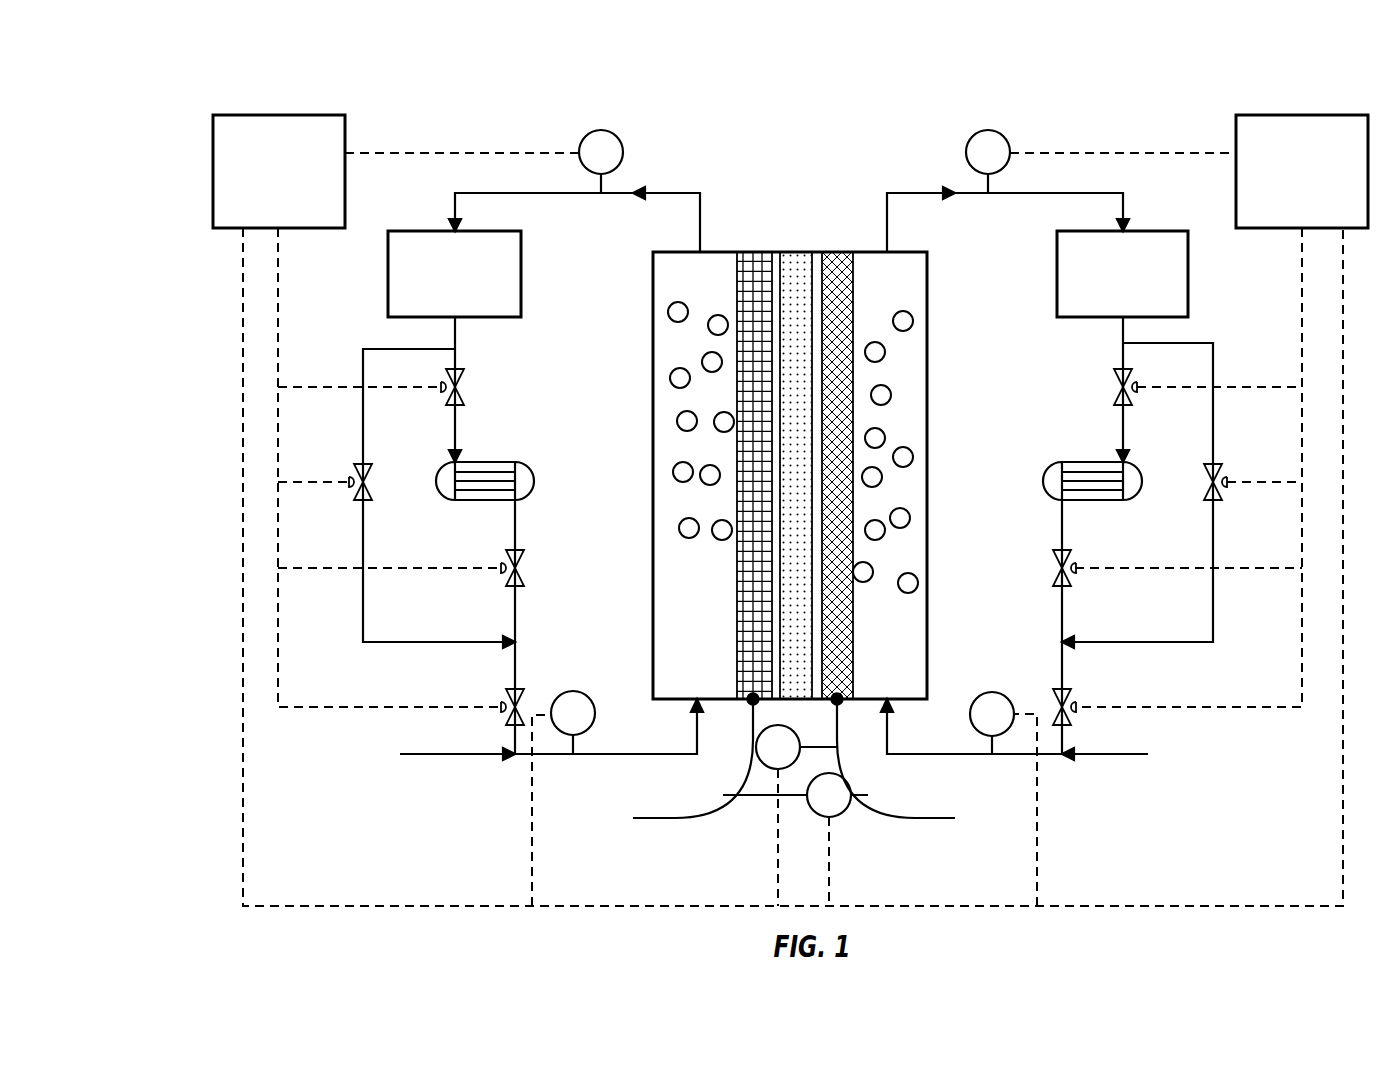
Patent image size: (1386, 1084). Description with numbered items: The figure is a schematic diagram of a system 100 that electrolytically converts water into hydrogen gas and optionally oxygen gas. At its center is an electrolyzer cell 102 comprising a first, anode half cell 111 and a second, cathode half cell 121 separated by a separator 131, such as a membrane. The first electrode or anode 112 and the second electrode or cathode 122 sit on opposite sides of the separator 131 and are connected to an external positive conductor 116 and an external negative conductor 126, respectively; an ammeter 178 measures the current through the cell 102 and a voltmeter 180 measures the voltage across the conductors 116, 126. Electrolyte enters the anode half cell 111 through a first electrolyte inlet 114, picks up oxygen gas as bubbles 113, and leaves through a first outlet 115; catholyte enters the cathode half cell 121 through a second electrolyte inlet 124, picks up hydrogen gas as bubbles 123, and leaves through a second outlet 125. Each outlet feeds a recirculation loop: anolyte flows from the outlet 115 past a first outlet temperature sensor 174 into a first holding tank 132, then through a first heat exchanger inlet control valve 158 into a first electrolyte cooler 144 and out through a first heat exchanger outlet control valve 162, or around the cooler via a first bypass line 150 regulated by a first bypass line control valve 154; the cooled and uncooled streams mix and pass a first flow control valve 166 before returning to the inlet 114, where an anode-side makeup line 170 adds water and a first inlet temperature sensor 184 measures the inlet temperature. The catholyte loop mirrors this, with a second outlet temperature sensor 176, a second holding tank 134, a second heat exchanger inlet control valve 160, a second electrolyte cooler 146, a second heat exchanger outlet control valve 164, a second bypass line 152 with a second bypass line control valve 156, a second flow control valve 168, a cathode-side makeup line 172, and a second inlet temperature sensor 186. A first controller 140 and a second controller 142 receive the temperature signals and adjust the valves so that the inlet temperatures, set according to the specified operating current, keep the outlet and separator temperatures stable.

The system 100 is at (172, 100).
The electrolyzer cell 102 is at (788, 422).
The first half cell 111 is at (950, 580).
The first electrode 112 is at (835, 310).
The bubbles 113 is at (913, 425).
The first electrolyte inlet 114 is at (889, 737).
The first outlet 115 is at (915, 190).
The external positive conductor 116 is at (900, 812).
The second half cell 121 is at (633, 577).
The second electrode 122 is at (745, 295).
The bubbles 123 is at (664, 398).
The second electrolyte inlet 124 is at (695, 737).
The second outlet 125 is at (655, 190).
The external negative conductor 126 is at (692, 812).
The separator 131 is at (800, 622).
The first holding tank 132 is at (1165, 237).
The second holding tank 134 is at (425, 237).
The first controller 140 is at (1260, 138).
The second controller 142 is at (230, 207).
The first electrolyte cooler 144 is at (1090, 465).
The second electrolyte cooler 146 is at (483, 465).
The first bypass line 150 is at (1190, 343).
The second bypass line 152 is at (375, 348).
The first bypass line control valve 154 is at (1222, 495).
The second bypass line control valve 156 is at (358, 495).
The first heat exchanger inlet control valve 158 is at (1112, 380).
The second heat exchanger inlet control valve 160 is at (468, 380).
The first heat exchanger outlet control valve 162 is at (1050, 562).
The second heat exchanger outlet control valve 164 is at (527, 562).
The first flow control valve 166 is at (1072, 700).
The second flow control valve 168 is at (506, 700).
The anode-side makeup line 170 is at (1108, 756).
The cathode-side makeup line 172 is at (448, 756).
The first outlet temperature sensor 174 is at (976, 140).
The second outlet temperature sensor 176 is at (617, 137).
The ammeter 178 is at (773, 770).
The voltmeter 180 is at (832, 817).
The first inlet temperature sensor 184 is at (993, 692).
The second inlet temperature sensor 186 is at (572, 692).